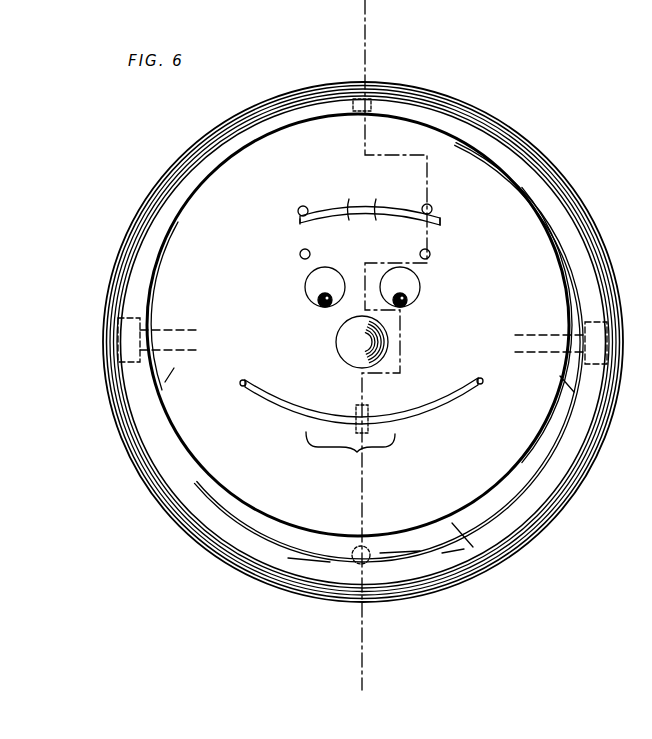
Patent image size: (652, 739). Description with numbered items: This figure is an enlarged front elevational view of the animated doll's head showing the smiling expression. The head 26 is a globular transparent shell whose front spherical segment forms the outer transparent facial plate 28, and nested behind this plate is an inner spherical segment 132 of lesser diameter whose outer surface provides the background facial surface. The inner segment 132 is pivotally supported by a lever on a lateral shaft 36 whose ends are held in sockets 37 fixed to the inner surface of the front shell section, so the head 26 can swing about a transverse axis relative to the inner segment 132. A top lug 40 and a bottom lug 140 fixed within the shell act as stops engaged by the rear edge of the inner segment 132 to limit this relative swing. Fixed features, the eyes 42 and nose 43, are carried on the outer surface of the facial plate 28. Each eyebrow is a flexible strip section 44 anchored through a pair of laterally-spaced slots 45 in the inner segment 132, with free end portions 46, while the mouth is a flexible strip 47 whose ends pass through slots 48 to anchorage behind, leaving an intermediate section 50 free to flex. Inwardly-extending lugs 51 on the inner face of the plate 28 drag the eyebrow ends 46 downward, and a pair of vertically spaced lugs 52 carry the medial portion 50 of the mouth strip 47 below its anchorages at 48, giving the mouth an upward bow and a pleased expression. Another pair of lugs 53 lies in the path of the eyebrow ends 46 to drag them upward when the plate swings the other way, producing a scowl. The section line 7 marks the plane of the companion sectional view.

The section line 7- 7 is at (368, 33).
The head 26 is at (598, 226).
The face portion 28 is at (250, 477).
The lateral shaft 36 is at (170, 372).
The sockets 37 is at (122, 317).
The top lug 40 is at (380, 93).
The eyes 42 is at (313, 298).
The nose 43 is at (383, 345).
The eyebrow strip section 44 is at (338, 207).
The slots 45 is at (375, 199).
The free end portions 46 is at (299, 226).
The mouth strip 47 is at (393, 409).
The slots 48 is at (240, 390).
The intermediate section 50 is at (350, 453).
The lugs 51 is at (297, 210).
The lugs 52 is at (354, 408).
The lugs 53 is at (300, 258).
The spherical segment 132 is at (490, 567).
The bottom lug 140 is at (328, 606).